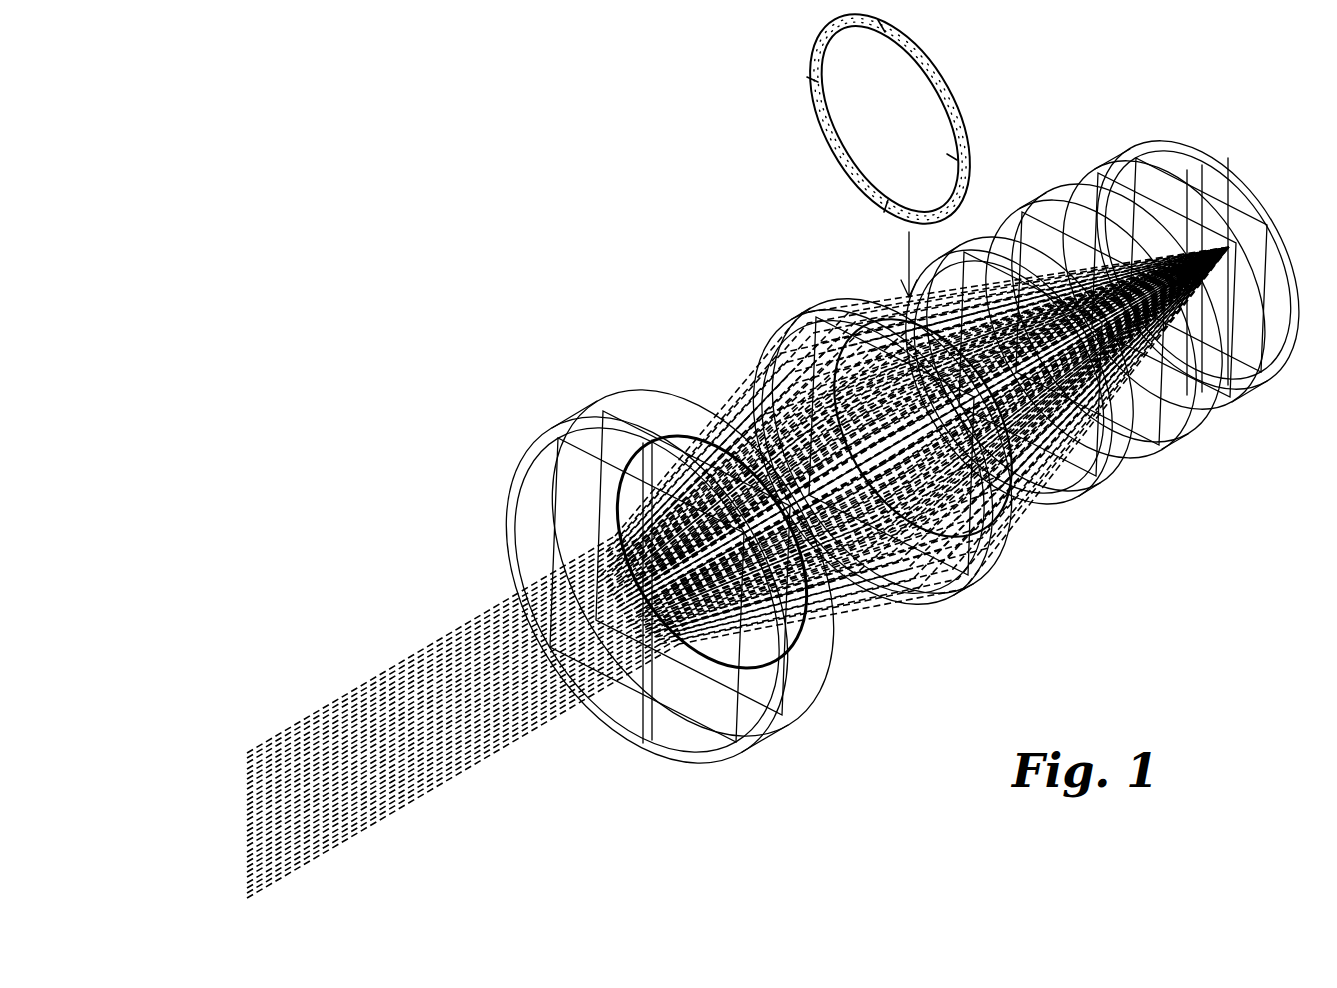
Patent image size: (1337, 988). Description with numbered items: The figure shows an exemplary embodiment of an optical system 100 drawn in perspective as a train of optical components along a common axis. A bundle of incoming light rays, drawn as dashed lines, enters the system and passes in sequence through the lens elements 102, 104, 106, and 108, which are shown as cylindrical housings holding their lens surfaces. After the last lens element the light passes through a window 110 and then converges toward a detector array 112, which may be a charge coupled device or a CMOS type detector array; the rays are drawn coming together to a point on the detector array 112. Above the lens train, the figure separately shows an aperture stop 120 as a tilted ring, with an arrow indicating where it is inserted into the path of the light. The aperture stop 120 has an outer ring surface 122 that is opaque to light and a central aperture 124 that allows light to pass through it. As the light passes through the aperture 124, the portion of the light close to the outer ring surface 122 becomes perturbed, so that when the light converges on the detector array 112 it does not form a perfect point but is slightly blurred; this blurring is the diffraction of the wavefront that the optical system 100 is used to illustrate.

The optical system 100 is at (1181, 644).
The lens element 102 is at (802, 687).
The lens element 104 is at (977, 570).
The lens element 106 is at (1110, 457).
The lens element 108 is at (1177, 407).
The window 110 is at (1277, 363).
The detector array 112 is at (1272, 207).
The aperture stop 120 is at (775, 70).
The outer ring surface 122 is at (947, 93).
The aperture 124 is at (850, 119).